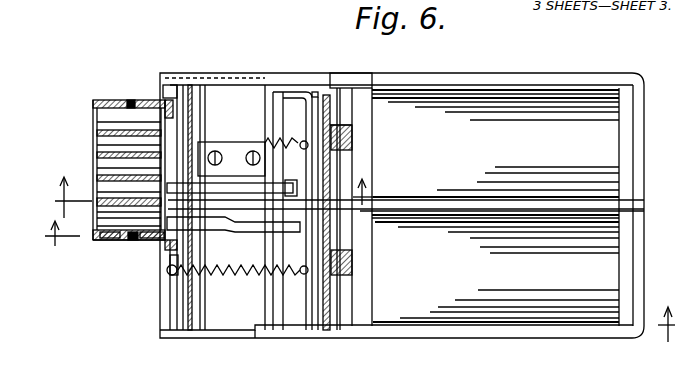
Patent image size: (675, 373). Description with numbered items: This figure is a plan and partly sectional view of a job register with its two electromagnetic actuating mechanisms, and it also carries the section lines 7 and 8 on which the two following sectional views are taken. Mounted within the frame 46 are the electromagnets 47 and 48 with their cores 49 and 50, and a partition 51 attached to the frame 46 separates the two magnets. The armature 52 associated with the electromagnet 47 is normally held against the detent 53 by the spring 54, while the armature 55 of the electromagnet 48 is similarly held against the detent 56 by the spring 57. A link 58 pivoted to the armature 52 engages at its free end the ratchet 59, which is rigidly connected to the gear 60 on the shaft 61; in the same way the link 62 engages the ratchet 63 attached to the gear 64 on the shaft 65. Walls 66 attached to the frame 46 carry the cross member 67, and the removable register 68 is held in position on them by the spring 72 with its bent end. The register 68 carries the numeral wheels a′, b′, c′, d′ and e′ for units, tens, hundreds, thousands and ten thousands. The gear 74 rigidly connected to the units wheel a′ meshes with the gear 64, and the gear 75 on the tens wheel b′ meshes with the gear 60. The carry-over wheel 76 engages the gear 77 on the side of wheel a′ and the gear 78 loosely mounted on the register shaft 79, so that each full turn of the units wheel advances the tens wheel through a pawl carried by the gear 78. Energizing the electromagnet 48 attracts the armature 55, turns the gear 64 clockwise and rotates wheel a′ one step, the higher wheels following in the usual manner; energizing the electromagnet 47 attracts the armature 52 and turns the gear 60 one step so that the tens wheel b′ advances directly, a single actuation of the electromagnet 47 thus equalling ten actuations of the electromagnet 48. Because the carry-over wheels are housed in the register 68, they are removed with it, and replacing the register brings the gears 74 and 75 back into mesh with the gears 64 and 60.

The frame 46 is at (408, 330).
The electromagnet 47 is at (525, 96).
The electromagnet 48 is at (502, 312).
The core 49 is at (345, 148).
The core 50 is at (345, 272).
The partition 51 is at (405, 210).
The armature 52 is at (324, 110).
The detent 53 is at (282, 100).
The spring 54 is at (199, 78).
The armature 55 is at (325, 326).
The detent 56 is at (280, 326).
The spring 57 is at (237, 281).
The link 58 is at (210, 165).
The ratchet 59 is at (110, 172).
The gear 60 is at (148, 240).
The shaft 61 is at (182, 92).
The link 62 is at (232, 232).
The ratchet 63 is at (165, 240).
The gear 64 is at (175, 250).
The shaft 65 is at (180, 320).
The walls 66 is at (218, 78).
The cross member 67 is at (163, 95).
The register 68 is at (105, 108).
The spring 72 is at (236, 160).
The gear 74 is at (125, 240).
The gear 75 is at (110, 192).
The carry-over wheel 76 is at (100, 240).
The gear 77 is at (93, 238).
The gear 78 is at (110, 203).
The register shaft 79 is at (127, 100).
The section line 7— 7 is at (356, 281).
The section line 8— 8 is at (215, 197).
The units numeral wheel a′ is at (137, 222).
The tens numeral wheel b′ is at (110, 185).
The hundreds numeral wheel c′ is at (108, 156).
The thousands numeral wheel d′ is at (105, 133).
The ten thousands numeral wheel e′ is at (129, 98).